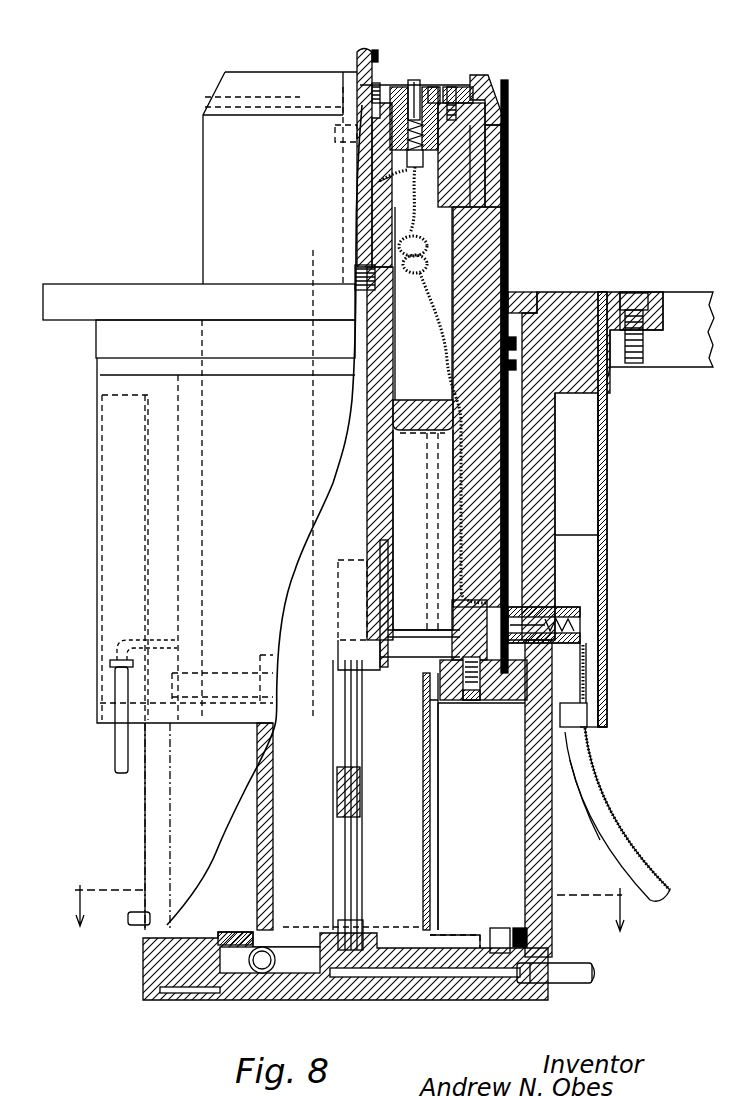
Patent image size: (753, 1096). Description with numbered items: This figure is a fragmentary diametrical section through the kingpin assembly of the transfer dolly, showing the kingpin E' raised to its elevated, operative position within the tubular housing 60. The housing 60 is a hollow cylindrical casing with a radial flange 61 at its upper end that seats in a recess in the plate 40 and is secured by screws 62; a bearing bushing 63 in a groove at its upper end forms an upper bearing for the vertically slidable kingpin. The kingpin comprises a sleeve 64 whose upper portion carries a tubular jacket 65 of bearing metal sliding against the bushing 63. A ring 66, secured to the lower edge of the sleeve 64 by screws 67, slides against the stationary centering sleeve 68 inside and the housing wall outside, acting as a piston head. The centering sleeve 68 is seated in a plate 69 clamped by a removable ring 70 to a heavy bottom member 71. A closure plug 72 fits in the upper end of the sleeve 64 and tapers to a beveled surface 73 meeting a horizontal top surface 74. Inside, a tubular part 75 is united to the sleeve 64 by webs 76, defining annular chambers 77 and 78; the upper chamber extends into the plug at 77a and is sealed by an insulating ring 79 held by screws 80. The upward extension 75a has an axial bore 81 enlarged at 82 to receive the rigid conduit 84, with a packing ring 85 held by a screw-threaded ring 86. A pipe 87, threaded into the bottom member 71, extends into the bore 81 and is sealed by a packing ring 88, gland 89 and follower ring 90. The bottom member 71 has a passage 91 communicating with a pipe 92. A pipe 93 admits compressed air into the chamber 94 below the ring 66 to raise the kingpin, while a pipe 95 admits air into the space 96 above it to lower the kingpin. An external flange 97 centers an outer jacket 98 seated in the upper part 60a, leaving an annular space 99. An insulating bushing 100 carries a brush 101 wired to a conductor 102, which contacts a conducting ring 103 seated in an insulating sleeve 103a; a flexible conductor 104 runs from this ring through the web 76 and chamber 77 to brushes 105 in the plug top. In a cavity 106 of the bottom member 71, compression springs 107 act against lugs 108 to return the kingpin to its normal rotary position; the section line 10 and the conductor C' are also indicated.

The rigid conduit 84 is at (372, 58).
The packing ring 85 is at (380, 100).
The screw-threaded ring 86 is at (405, 88).
The brush 105 is at (416, 82).
The screws 80 is at (455, 88).
The ring of insulating material 79 is at (420, 100).
The horizontal top surface 74 is at (455, 92).
The beveled surface 73 is at (522, 102).
The upper chamber extension 77a is at (470, 160).
The closure plug 72 is at (478, 165).
The tubular jacket 65 is at (505, 218).
The flexible conductor 104 is at (425, 268).
The sleeve 64 is at (485, 290).
The bearing bushing 63 is at (540, 292).
The screws 62 is at (636, 295).
The radial flange 61 is at (660, 302).
The plate 40 is at (660, 362).
The upper part of housing 60a is at (600, 372).
The tubular housing 60 is at (530, 512).
The outer jacket 98 is at (605, 495).
The insulating sleeve 103a is at (570, 545).
The annular space 99 is at (600, 540).
The brush 101 is at (548, 588).
The insulating bushing 100 is at (580, 606).
The conducting ring 103 is at (582, 655).
The conductor 102 is at (587, 692).
The hose C' is at (617, 814).
The external horizontal flange 97 is at (575, 780).
The section line 10 is at (341, 923).
The pipe 92 is at (572, 976).
The passage 91 is at (437, 975).
The removable ring 70 is at (495, 930).
The centering sleeve 68 is at (257, 768).
The pipe 87 is at (357, 820).
The cavity 106 is at (302, 963).
The bottom member 71 is at (293, 1000).
The compression springs 107 is at (252, 975).
The plate 69 is at (235, 932).
The lugs 108 is at (278, 945).
The pipe 93 is at (137, 928).
The chamber 94 is at (180, 850).
The pipe 95 is at (116, 760).
The space 96 is at (120, 553).
The axial bore 81 is at (360, 210).
The packing ring 88 is at (372, 601).
The gland 89 is at (400, 632).
The screw-threaded follower ring 90 is at (425, 690).
The annular chamber 78 is at (393, 518).
The annular chamber 77 is at (370, 390).
The tubular part 75 is at (367, 350).
The web 76 is at (442, 368).
The enlarged socket 82 is at (380, 132).
The upward extension 75a is at (378, 183).
The screws 67 is at (471, 700).
The ring 66 is at (515, 705).
The unit E' is at (222, 178).